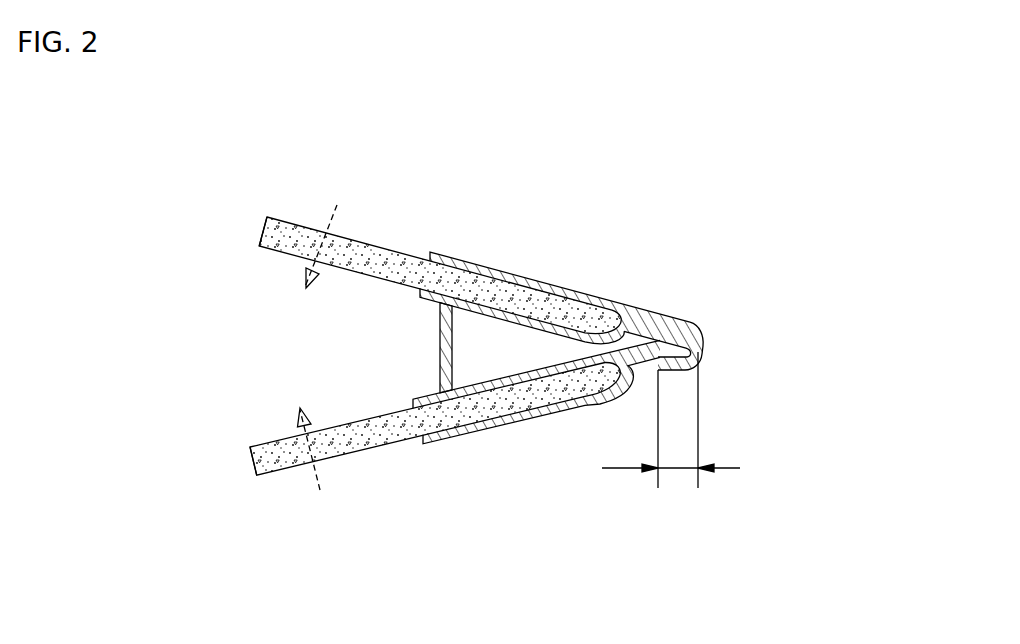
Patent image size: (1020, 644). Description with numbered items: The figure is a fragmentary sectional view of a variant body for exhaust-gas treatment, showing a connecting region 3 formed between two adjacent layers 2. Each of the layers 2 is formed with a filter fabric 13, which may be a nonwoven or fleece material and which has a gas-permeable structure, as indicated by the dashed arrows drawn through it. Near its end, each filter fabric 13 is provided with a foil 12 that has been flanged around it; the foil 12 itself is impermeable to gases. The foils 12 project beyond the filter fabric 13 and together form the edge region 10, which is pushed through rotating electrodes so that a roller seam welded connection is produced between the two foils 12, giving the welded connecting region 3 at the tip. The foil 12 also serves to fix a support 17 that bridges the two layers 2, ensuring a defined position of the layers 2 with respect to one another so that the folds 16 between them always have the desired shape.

The layers 2 is at (232, 234).
The connecting region 3 is at (683, 470).
The edge region 10 is at (653, 311).
The foil 12 is at (480, 262).
The filter fabric 13 is at (280, 248).
The folds 16 is at (358, 357).
The support 17 is at (445, 366).